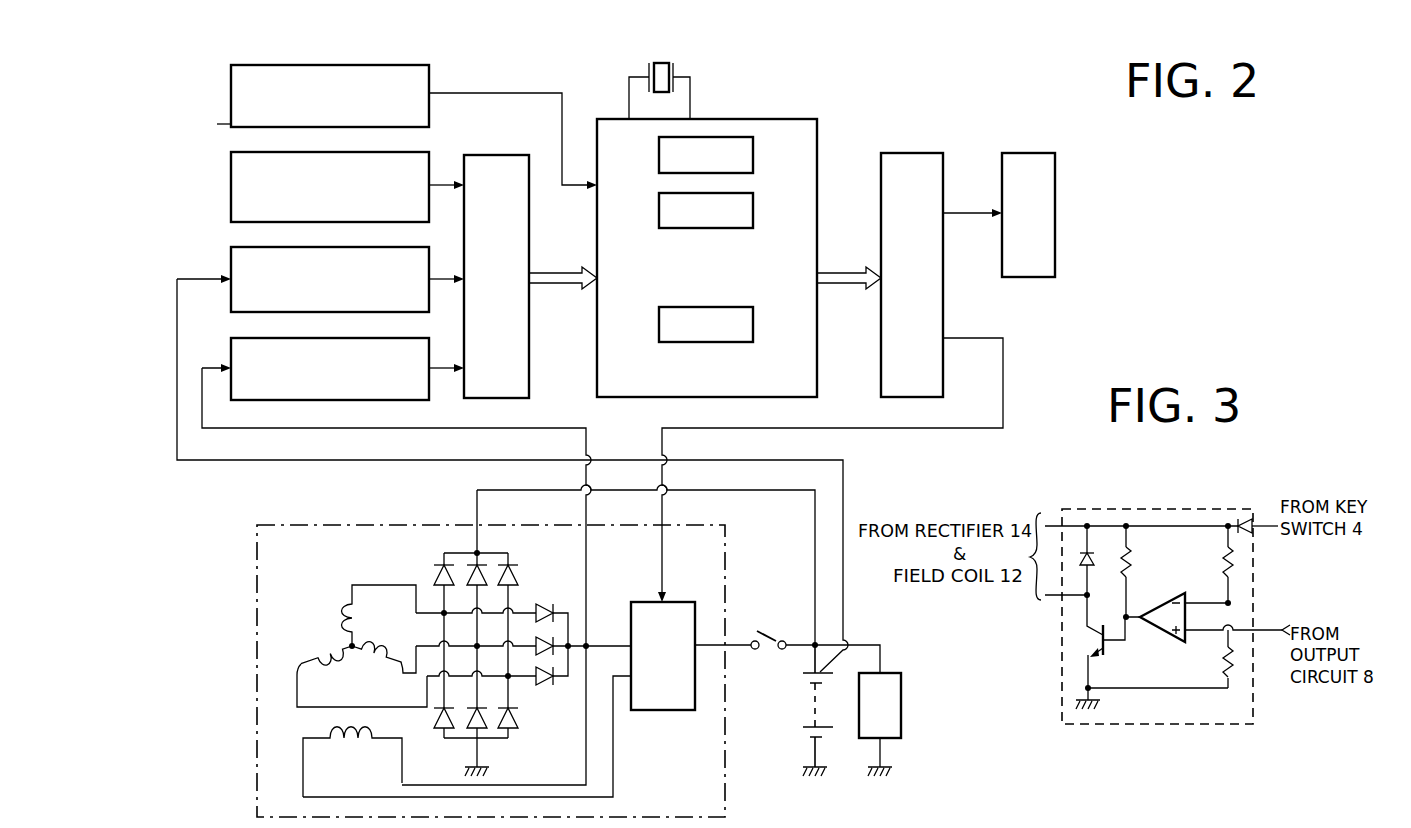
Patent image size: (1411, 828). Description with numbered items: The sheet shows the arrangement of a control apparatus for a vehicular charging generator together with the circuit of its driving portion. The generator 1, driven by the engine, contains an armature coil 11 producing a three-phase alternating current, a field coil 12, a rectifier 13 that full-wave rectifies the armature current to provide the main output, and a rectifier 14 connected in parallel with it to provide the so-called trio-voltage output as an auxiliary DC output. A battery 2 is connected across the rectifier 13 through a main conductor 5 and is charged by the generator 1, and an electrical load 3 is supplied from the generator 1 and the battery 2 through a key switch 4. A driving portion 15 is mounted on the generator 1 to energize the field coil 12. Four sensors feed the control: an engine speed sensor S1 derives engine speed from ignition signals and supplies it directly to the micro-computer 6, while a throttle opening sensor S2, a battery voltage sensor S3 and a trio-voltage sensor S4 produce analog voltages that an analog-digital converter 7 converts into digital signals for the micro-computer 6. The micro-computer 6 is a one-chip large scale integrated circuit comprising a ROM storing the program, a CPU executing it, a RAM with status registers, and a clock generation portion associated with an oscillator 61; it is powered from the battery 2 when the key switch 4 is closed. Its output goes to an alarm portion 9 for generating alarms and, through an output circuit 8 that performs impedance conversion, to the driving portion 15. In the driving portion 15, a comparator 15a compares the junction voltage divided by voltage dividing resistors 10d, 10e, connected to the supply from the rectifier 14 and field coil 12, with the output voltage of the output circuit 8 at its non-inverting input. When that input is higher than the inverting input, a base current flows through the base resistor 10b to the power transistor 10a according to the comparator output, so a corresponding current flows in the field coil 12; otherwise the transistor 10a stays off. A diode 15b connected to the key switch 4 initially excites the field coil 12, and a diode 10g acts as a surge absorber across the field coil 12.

In FIG. 2, the generator 1 is at (257, 637).
In FIG. 2, the battery 2 is at (805, 728).
In FIG. 2, the electrical load 3 is at (901, 688).
In FIG. 2, the key switch 4 is at (770, 631).
In FIG. 2, the main conductor 5 is at (741, 493).
In FIG. 2, the micro-computer 6 is at (776, 119).
In FIG. 2, the oscillator 61 is at (670, 55).
In FIG. 2, the analog-digital converter 7 is at (529, 337).
In FIG. 2, the output circuit 8 is at (911, 153).
In FIG. 2, the alarm portion 9 is at (1033, 153).
In FIG. 2, the armature coil 11 is at (346, 607).
In FIG. 2, the field coil 12 is at (351, 742).
In FIG. 2, the rectifier 13 is at (437, 573).
In FIG. 2, the rectifier 14 is at (545, 603).
In FIG. 2, the driving portion 15 is at (658, 710).
In FIG. 3, the driving portion 15 is at (1190, 623).
In FIG. 3, the comparator 15a is at (1172, 601).
In FIG. 3, the diode 15b is at (1244, 519).
In FIG. 3, the power transistor 10a is at (1095, 655).
In FIG. 3, the base resistor 10b is at (1127, 545).
In FIG. 3, the voltage dividing resistor 10d is at (1238, 552).
In FIG. 3, the voltage dividing resistor 10e is at (1225, 660).
In FIG. 3, the diode 10g is at (1081, 557).
In FIG. 2, the engine speed sensor S1 is at (231, 78).
In FIG. 2, the throttle opening sensor S2 is at (231, 155).
In FIG. 2, the battery voltage sensor S3 is at (231, 249).
In FIG. 2, the trio-voltage sensor S4 is at (245, 338).